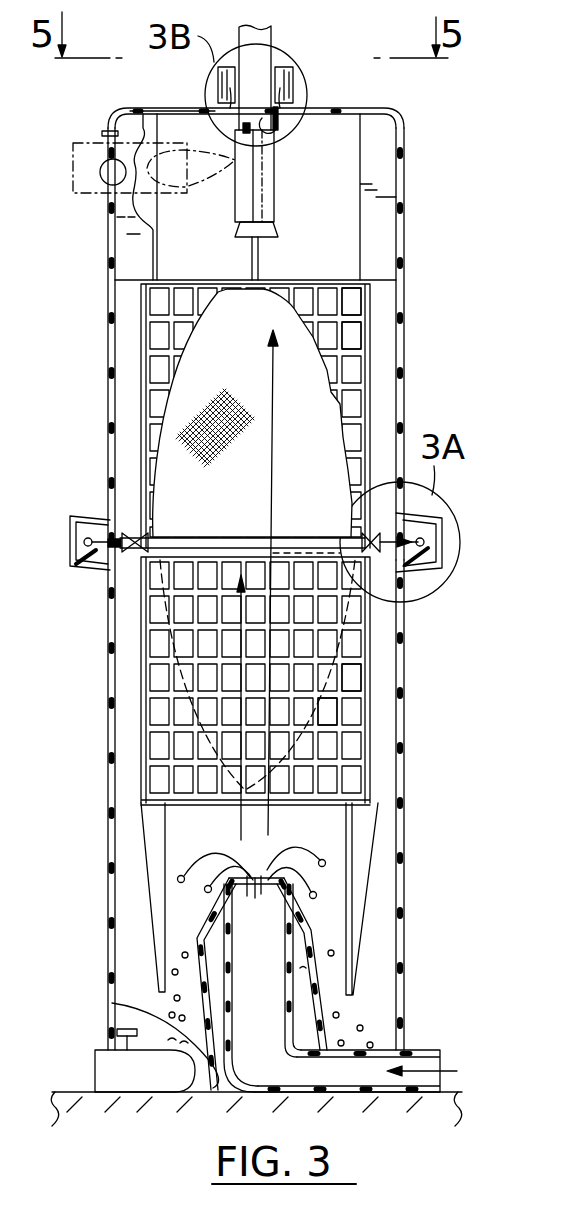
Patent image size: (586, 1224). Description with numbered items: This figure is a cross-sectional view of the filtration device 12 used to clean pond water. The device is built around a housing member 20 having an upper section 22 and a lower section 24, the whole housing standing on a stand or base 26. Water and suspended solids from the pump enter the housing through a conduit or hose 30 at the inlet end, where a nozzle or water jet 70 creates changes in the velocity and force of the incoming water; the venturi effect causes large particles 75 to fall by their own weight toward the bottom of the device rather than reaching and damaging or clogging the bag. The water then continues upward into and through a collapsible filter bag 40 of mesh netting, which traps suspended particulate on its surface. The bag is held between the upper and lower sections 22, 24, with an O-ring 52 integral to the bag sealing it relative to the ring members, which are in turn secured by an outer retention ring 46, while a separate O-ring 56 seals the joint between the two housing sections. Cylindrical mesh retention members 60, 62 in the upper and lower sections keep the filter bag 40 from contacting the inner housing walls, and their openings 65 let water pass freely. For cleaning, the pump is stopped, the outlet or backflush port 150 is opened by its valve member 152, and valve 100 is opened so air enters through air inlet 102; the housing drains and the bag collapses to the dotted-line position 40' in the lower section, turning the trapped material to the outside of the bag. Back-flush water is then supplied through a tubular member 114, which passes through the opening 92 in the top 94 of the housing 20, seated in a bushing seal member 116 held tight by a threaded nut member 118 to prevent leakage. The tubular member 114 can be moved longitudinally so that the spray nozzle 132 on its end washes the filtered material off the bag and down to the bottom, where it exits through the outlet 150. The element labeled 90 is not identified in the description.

The filtration device 12 is at (90, 703).
The housing member 20 is at (112, 434).
The upper section 22 is at (403, 328).
The lower section 24 is at (401, 758).
The stand or base 26 is at (68, 1092).
The conduit or hose 30 is at (421, 1049).
The collapsible filter bag 40 is at (299, 562).
The collapsed filter bag position 40' is at (205, 700).
The outer retention ring 46 is at (72, 562).
The O-ring sealing member 52 is at (200, 540).
The O-ring 56 is at (440, 514).
The mesh retention member 60 is at (167, 342).
The mesh retention member 62 is at (163, 643).
The openings 65 is at (356, 332).
The nozzle or water jet 70 is at (218, 912).
The large particles 75 is at (205, 888).
The cam baffle 90 is at (100, 193).
The opening 92 is at (275, 142).
The top 94 is at (160, 108).
The valve 100 is at (104, 131).
The air inlet 102 is at (100, 181).
The tubular member 114 is at (260, 50).
The bushing seal member 116 is at (292, 94).
The threaded nut member 118 is at (290, 78).
The spray nozzle 132 is at (274, 233).
The outlet or backflush port 150 is at (127, 1085).
The valve member 152 is at (125, 1030).